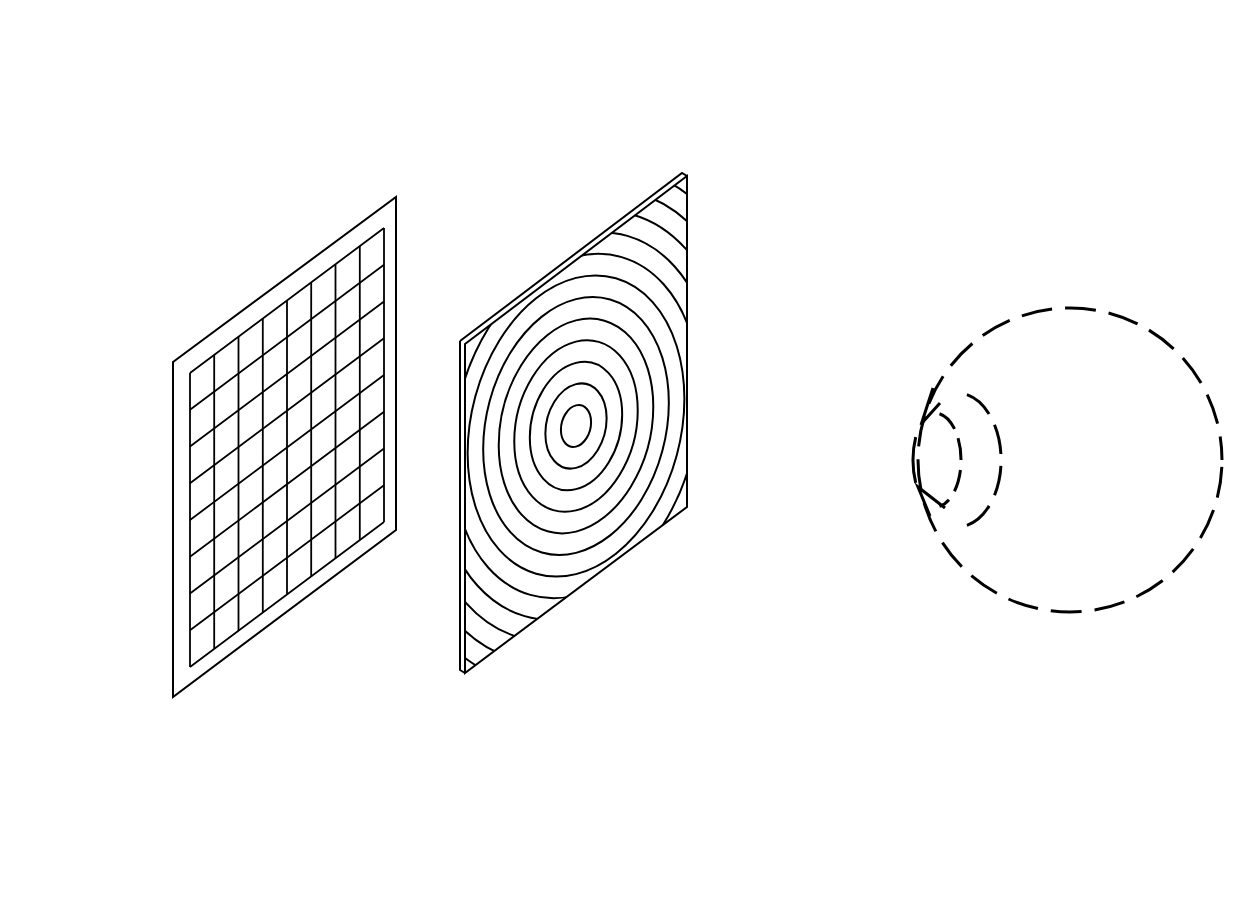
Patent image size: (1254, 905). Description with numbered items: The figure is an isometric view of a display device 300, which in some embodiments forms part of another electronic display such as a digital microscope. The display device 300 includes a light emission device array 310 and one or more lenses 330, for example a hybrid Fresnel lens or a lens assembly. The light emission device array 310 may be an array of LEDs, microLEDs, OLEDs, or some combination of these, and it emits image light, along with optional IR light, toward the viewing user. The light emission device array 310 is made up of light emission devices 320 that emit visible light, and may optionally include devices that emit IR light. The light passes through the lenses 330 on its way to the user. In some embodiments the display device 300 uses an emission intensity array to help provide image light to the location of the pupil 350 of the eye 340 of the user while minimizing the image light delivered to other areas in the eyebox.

The display device 300 is at (358, 84).
The light emission device array 310 is at (173, 502).
The light emission devices 320 is at (297, 297).
The lenses 330 is at (568, 257).
The eye 340 is at (1067, 307).
The pupil 350 is at (948, 485).